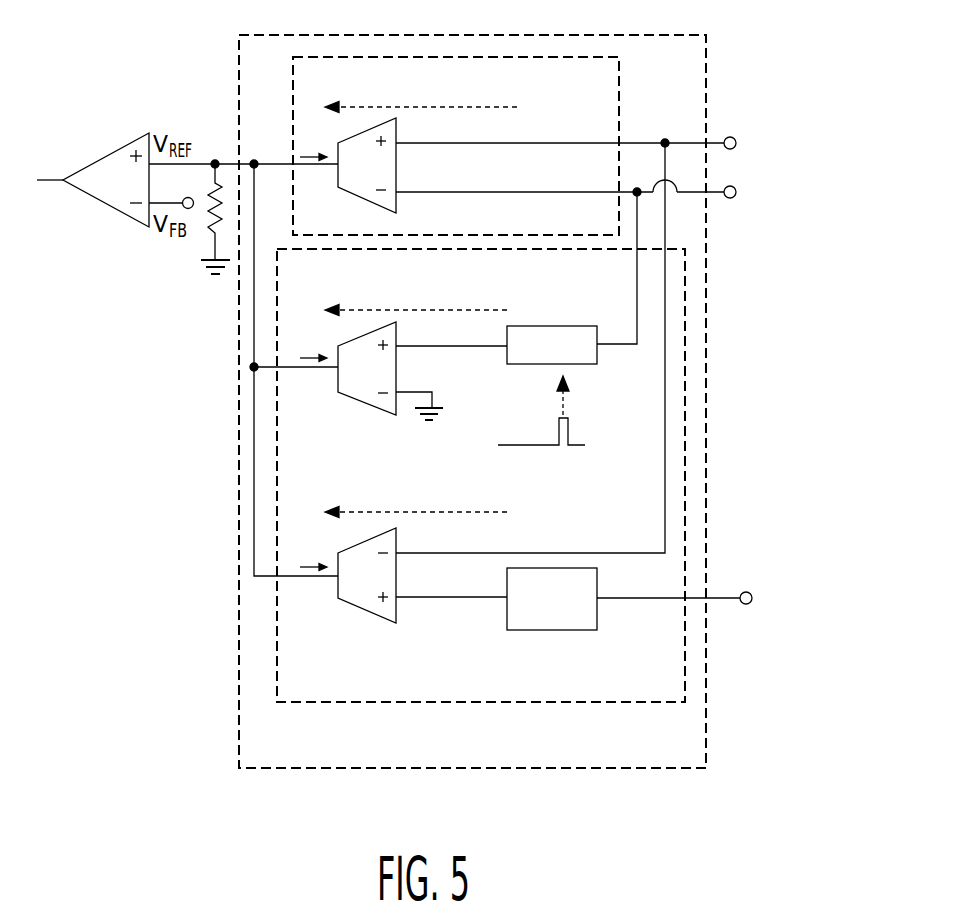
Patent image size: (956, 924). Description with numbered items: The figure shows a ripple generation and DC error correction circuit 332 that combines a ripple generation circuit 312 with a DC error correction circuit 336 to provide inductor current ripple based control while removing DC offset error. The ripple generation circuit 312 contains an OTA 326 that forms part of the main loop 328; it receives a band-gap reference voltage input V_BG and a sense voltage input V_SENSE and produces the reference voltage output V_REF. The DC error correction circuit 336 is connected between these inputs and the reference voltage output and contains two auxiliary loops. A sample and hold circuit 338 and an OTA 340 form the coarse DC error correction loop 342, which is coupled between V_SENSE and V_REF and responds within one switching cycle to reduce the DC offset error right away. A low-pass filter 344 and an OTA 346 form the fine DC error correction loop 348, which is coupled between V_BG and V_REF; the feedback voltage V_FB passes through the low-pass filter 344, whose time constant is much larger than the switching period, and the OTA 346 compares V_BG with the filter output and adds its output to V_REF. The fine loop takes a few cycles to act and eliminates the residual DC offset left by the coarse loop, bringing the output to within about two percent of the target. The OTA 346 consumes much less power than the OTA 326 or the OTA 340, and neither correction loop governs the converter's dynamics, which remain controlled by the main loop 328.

The ripple generation circuit 312 is at (619, 101).
The OTA 326 is at (396, 164).
The main loop 328 is at (470, 107).
The ripple generation and DC error correction circuit 332 is at (239, 675).
The DC error correction circuit 336 is at (277, 630).
The sample and hold circuit 338 is at (583, 364).
The OTA 340 is at (396, 367).
The coarse DC error correction loop 342 is at (507, 310).
The low-pass filter 344 is at (507, 613).
The OTA 346 is at (363, 610).
The fine DC error correction loop 348 is at (507, 512).